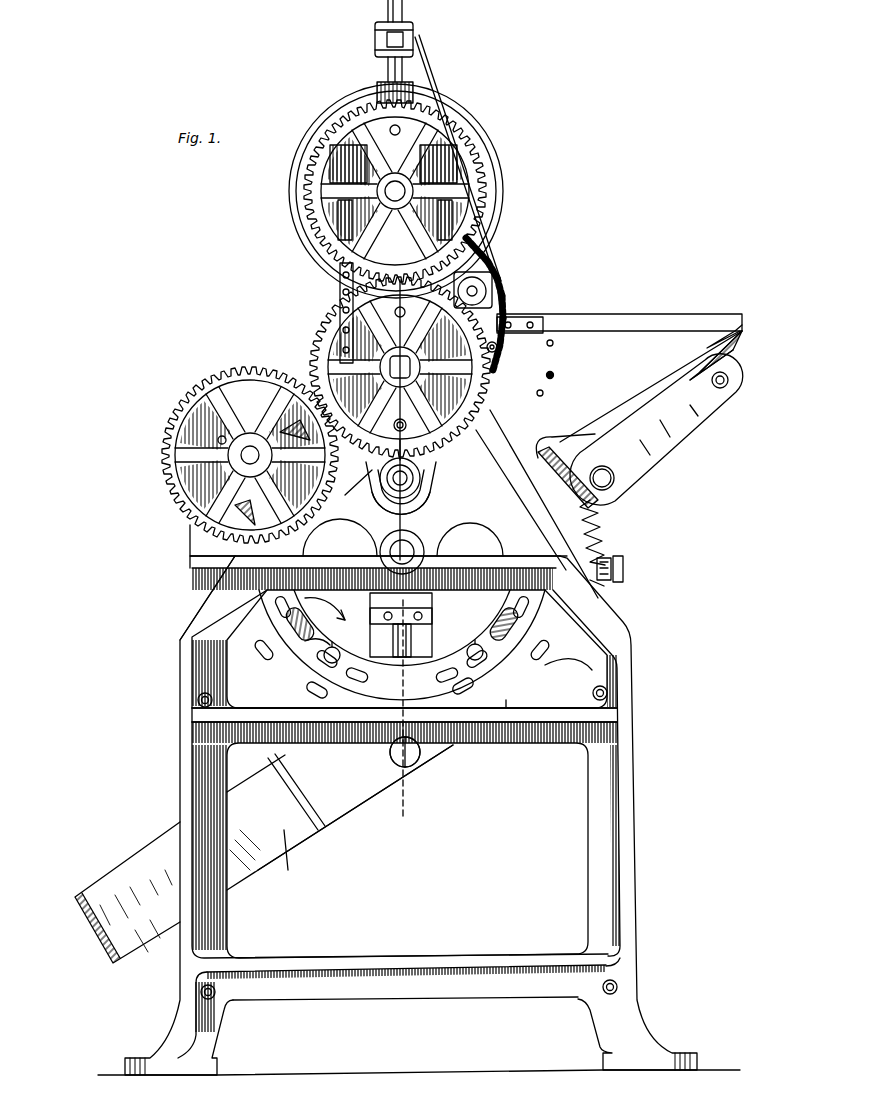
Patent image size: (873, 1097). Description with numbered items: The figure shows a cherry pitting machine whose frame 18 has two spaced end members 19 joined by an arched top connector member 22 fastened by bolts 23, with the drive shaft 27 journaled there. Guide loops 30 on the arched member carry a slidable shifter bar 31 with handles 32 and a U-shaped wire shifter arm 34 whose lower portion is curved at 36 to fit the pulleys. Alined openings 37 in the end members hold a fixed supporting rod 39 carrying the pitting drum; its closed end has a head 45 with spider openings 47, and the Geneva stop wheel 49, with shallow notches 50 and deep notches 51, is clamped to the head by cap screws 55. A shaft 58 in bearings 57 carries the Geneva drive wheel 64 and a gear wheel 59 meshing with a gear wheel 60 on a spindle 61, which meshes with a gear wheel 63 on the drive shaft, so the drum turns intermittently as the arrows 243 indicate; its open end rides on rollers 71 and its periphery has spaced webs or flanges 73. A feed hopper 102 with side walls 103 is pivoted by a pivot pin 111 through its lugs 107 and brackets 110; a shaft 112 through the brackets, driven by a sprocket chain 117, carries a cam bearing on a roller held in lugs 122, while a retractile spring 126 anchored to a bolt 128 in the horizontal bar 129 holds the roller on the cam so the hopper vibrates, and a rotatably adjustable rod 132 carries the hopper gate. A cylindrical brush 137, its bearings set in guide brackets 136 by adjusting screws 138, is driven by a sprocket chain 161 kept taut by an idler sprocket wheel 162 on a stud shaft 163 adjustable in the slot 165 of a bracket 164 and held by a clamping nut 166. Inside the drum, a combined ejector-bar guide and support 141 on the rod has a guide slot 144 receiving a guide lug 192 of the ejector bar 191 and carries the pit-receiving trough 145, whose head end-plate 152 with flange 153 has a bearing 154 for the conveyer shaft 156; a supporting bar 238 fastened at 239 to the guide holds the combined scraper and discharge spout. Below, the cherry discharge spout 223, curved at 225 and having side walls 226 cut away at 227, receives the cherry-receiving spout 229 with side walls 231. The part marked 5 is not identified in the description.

The main gear / drive shaft 5 is at (420, 95).
The frame 18 is at (632, 641).
The end members 19 is at (597, 733).
The arched top connector member 22 is at (388, 68).
The bolts 23 is at (463, 150).
The drive shaft 27 is at (390, 195).
The guide loops 30 is at (378, 25).
The shifter bar 31 is at (387, 40).
The handles 32 is at (402, 9).
The shifter arm 34 is at (440, 96).
The curved lower portion of shifter arm 36 is at (494, 228).
The opening 37 is at (410, 545).
The supporting rod 39 is at (396, 562).
The head 45 is at (437, 603).
The openings 47 is at (428, 492).
The stop wheel 49 is at (463, 696).
The concaved notches 50 is at (515, 640).
The deep notches 51 is at (530, 612).
The cap screws 55 is at (338, 648).
The bearings 57 is at (275, 430).
The shaft 58 is at (244, 459).
The gear wheel 59 is at (250, 372).
The gear wheel 60 is at (328, 318).
The spindle 61 is at (412, 367).
The gear wheel 63 is at (471, 195).
The drive wheel 64 is at (219, 437).
The rollers 71 is at (578, 674).
The peripheral webs or flanges 73 is at (317, 700).
The feed hopper 102 is at (603, 318).
The side wall 103 is at (653, 342).
The lugs 107 is at (718, 354).
The brackets 110 is at (650, 478).
The pivot pin 111 is at (728, 381).
The shaft 112 is at (612, 490).
The sprocket chain 117 is at (612, 523).
The lugs 122 is at (603, 428).
The retractile spring 126 is at (563, 521).
The bolt 128 is at (624, 566).
The horizontal bar 129 is at (606, 584).
The rotatably adjustable rod 132 is at (544, 393).
The guide brackets 136 is at (497, 347).
The cylindrical brush 137 is at (493, 306).
The adjusting screws 138 is at (486, 292).
The combined ejector-bar guide and support 141 is at (450, 569).
The guide slot 144 is at (412, 627).
The pit-receiving box or trough 145 is at (378, 485).
The head end-plate 152 is at (388, 471).
The outstanding flange 153 is at (416, 478).
The bearing 154 is at (432, 499).
The conveyer shaft 156 is at (352, 524).
The sprocket chain 161 is at (340, 281).
The idler sprocket wheel 162 is at (492, 256).
The stud shaft 163 is at (505, 300).
The bracket 164 is at (504, 284).
The slot 165 is at (506, 310).
The clamping nut 166 is at (497, 270).
The ejector bar 191 is at (335, 640).
The guide lug 192 is at (392, 742).
The cherry discharge spout 223 is at (362, 810).
The curved upper end 225 is at (562, 664).
The side walls 226 is at (283, 835).
The cut-away portions 227 is at (508, 705).
The cherry-receiving spout 229 is at (195, 598).
The side walls 231 is at (200, 577).
The supporting bar 238 is at (372, 612).
The fastening point 239 is at (422, 616).
The arrows 243 is at (325, 604).